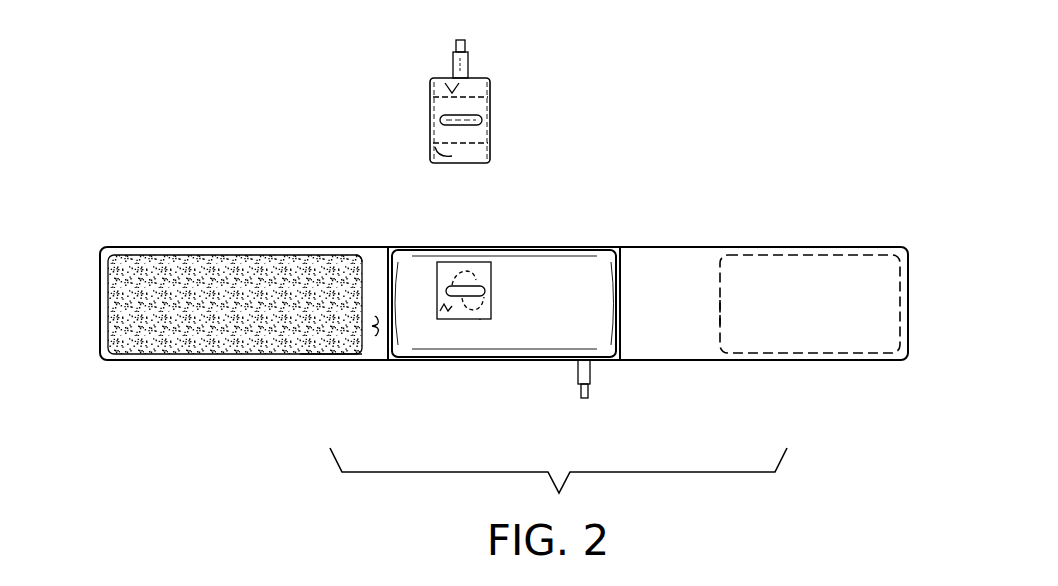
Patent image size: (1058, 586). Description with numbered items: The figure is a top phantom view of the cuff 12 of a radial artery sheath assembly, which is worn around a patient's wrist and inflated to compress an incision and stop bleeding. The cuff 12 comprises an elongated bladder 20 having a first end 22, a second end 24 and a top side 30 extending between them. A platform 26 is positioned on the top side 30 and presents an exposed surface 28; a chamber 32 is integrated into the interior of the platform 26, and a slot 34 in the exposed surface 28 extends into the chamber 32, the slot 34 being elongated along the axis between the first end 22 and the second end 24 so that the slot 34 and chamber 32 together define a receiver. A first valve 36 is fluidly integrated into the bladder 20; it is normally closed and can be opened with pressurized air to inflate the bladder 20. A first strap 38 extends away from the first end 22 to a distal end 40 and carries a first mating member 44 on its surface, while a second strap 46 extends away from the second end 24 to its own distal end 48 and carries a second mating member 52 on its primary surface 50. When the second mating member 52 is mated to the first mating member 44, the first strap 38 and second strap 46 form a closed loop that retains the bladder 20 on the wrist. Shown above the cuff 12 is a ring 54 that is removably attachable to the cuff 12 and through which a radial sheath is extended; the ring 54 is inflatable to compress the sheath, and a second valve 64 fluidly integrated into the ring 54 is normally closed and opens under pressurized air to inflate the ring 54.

The cuff 12 is at (830, 214).
The bladder 20 is at (590, 249).
The first end 22 is at (621, 297).
The second end 24 is at (390, 268).
The platform 26 is at (480, 320).
The exposed surface 28 is at (448, 320).
The top side 30 is at (536, 290).
The chamber 32 is at (456, 287).
The slot 34 is at (478, 287).
The first valve 36 is at (592, 371).
The first strap 38 is at (870, 361).
The distal end 40 is at (905, 318).
The first mating member 44 is at (717, 318).
The second strap 46 is at (331, 356).
The distal end 48 is at (100, 313).
The primary surface 50 is at (372, 326).
The second mating member 52 is at (180, 346).
The ring 54 is at (430, 80).
The second valve 64 is at (469, 44).